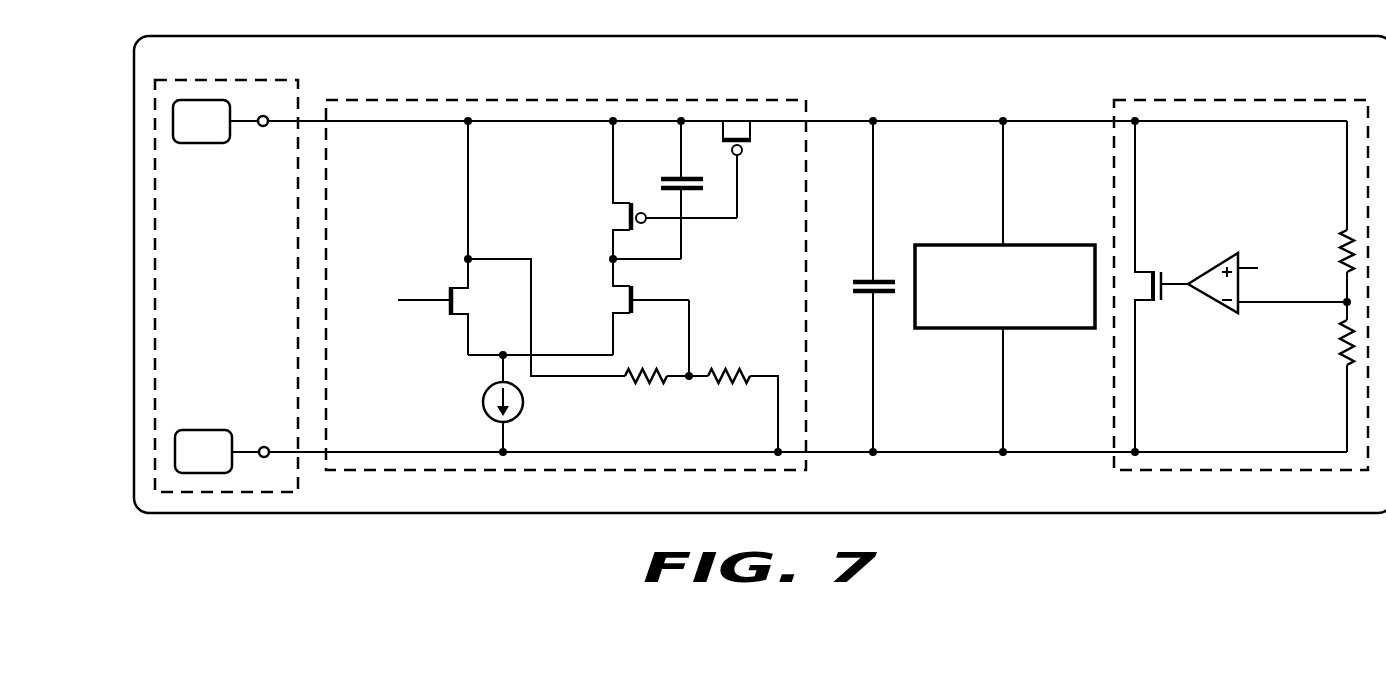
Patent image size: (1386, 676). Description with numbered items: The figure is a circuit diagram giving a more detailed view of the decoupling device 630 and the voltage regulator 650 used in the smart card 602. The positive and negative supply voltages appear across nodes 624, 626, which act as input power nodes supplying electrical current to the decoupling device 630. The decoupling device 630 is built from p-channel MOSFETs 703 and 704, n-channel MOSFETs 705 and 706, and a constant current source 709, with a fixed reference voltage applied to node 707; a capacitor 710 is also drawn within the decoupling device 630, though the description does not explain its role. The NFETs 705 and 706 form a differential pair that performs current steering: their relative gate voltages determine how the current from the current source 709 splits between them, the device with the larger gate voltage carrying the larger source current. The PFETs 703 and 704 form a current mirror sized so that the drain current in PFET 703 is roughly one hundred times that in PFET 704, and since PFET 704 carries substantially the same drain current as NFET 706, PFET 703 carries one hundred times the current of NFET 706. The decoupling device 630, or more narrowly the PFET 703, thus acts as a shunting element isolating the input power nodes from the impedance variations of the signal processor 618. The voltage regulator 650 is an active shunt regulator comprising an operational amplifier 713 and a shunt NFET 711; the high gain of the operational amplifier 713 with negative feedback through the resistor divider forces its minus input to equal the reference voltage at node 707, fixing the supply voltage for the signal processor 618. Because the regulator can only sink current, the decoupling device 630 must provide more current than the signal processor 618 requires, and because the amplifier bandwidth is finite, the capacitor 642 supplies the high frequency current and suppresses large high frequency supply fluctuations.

The smart card 602 is at (134, 279).
The signal processor 618 is at (946, 245).
The input power node 624 is at (263, 127).
The input power node 626 is at (266, 446).
The decoupling device 630 is at (564, 100).
The capacitor 642 is at (856, 282).
The voltage regulator 650 is at (1252, 100).
The p-channel MOSFET 703 is at (748, 149).
The p-channel MOSFET 704 is at (296, 82).
The n-channel MOSFET 705 is at (452, 318).
The n-channel MOSFET 706 is at (609, 311).
The node 707 is at (427, 297).
The constant current source 709 is at (483, 410).
The capacitor 710 is at (665, 179).
The shunt NFET 711 is at (1154, 302).
The operational amplifier 713 is at (1214, 273).